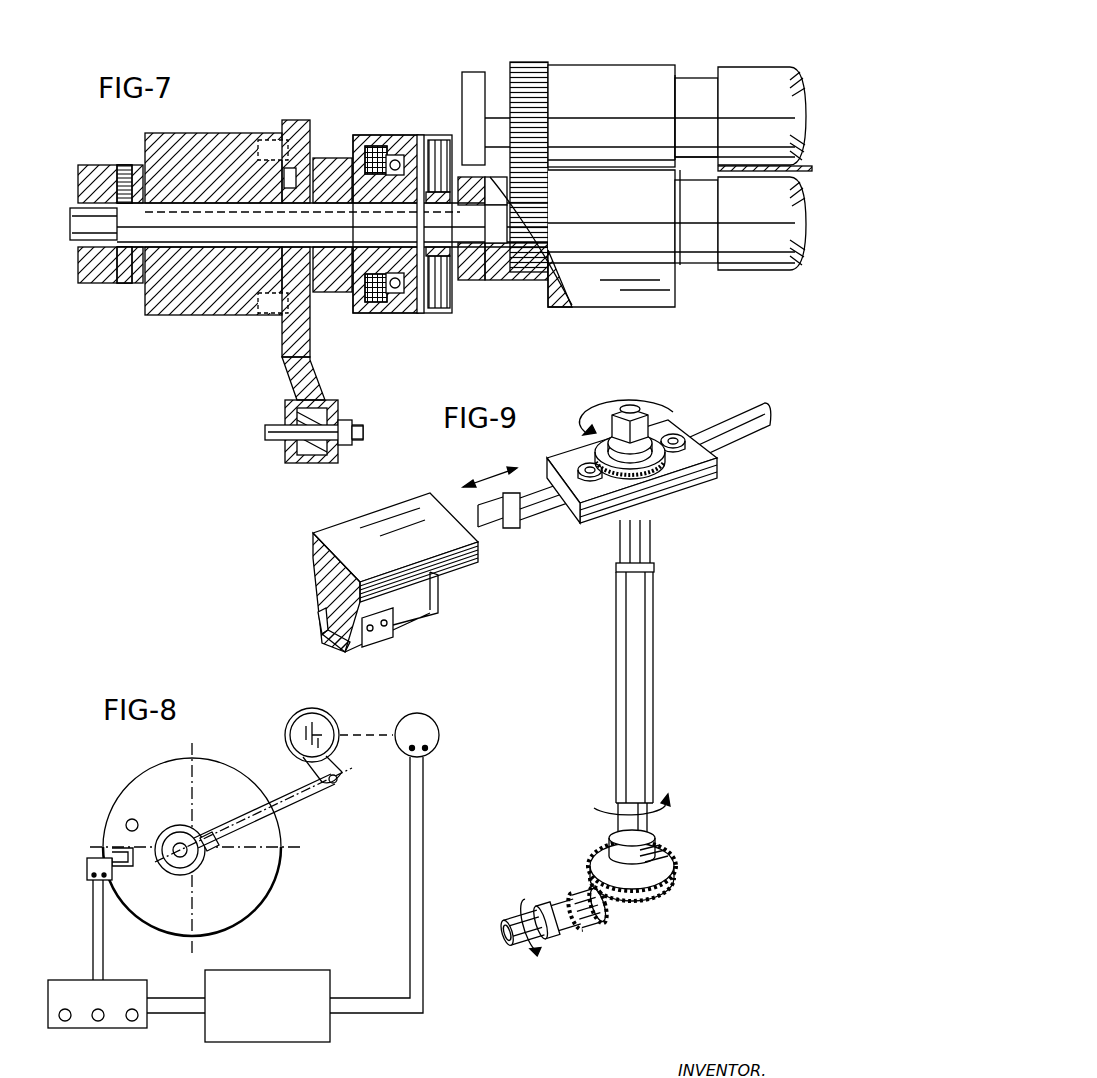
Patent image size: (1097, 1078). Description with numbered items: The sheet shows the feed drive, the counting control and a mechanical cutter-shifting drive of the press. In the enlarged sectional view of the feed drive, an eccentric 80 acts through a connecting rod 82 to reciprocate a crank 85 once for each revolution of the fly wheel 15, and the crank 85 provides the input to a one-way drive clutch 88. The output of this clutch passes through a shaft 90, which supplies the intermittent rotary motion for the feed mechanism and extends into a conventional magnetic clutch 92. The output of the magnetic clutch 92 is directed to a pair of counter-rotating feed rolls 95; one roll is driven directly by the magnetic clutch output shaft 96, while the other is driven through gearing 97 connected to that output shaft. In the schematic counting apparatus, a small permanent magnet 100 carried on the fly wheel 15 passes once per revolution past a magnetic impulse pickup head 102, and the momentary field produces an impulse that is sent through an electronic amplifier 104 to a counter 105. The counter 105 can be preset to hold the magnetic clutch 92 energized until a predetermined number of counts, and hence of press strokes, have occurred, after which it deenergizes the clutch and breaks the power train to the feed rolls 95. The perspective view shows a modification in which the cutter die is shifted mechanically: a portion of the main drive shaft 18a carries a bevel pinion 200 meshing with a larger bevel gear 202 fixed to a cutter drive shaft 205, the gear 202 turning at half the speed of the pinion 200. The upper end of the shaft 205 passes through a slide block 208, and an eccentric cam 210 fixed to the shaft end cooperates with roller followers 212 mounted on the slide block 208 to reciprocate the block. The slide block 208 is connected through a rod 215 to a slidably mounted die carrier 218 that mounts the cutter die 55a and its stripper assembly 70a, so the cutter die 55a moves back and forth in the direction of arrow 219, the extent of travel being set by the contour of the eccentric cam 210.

In FIG. 7, the shaft 90 is at (76, 222).
In FIG. 7, the one-way drive clutch 88 is at (192, 318).
In FIG. 8, the one-way drive clutch 88 is at (296, 705).
In FIG. 7, the crank 85 is at (287, 368).
In FIG. 7, the magnetic clutch 92 is at (402, 322).
In FIG. 8, the magnetic clutch 92 is at (450, 741).
In FIG. 7, the magnetic clutch output shaft 96 is at (500, 240).
In FIG. 7, the gearing 97 is at (526, 58).
In FIG. 7, the feed rolls 95 is at (744, 77).
In FIG. 8, the fly wheel 15 is at (168, 777).
In FIG. 8, the eccentric 80 is at (178, 870).
In FIG. 8, the connecting rod 82 is at (300, 802).
In FIG. 8, the permanent magnet 100 is at (126, 819).
In FIG. 8, the magnetic impulse pickup head 102 is at (113, 858).
In FIG. 8, the electronic amplifier 104 is at (78, 1030).
In FIG. 8, the counter 105 is at (258, 1042).
In FIG. 9, the die carrier 218 is at (337, 530).
In FIG. 9, the cutter die 55a is at (320, 623).
In FIG. 9, the stripper assembly 70a is at (334, 654).
In FIG. 9, the rod 215 is at (508, 528).
In FIG. 9, the arrow 219 is at (483, 480).
In FIG. 9, the slide block 208 is at (698, 477).
In FIG. 9, the roller followers 212 is at (678, 433).
In FIG. 9, the eccentric cam 210 is at (653, 473).
In FIG. 9, the cutter drive shaft 205 is at (647, 683).
In FIG. 9, the bevel gear 202 is at (677, 877).
In FIG. 9, the bevel pinion 200 is at (606, 932).
In FIG. 9, the main drive shaft 18a is at (548, 951).